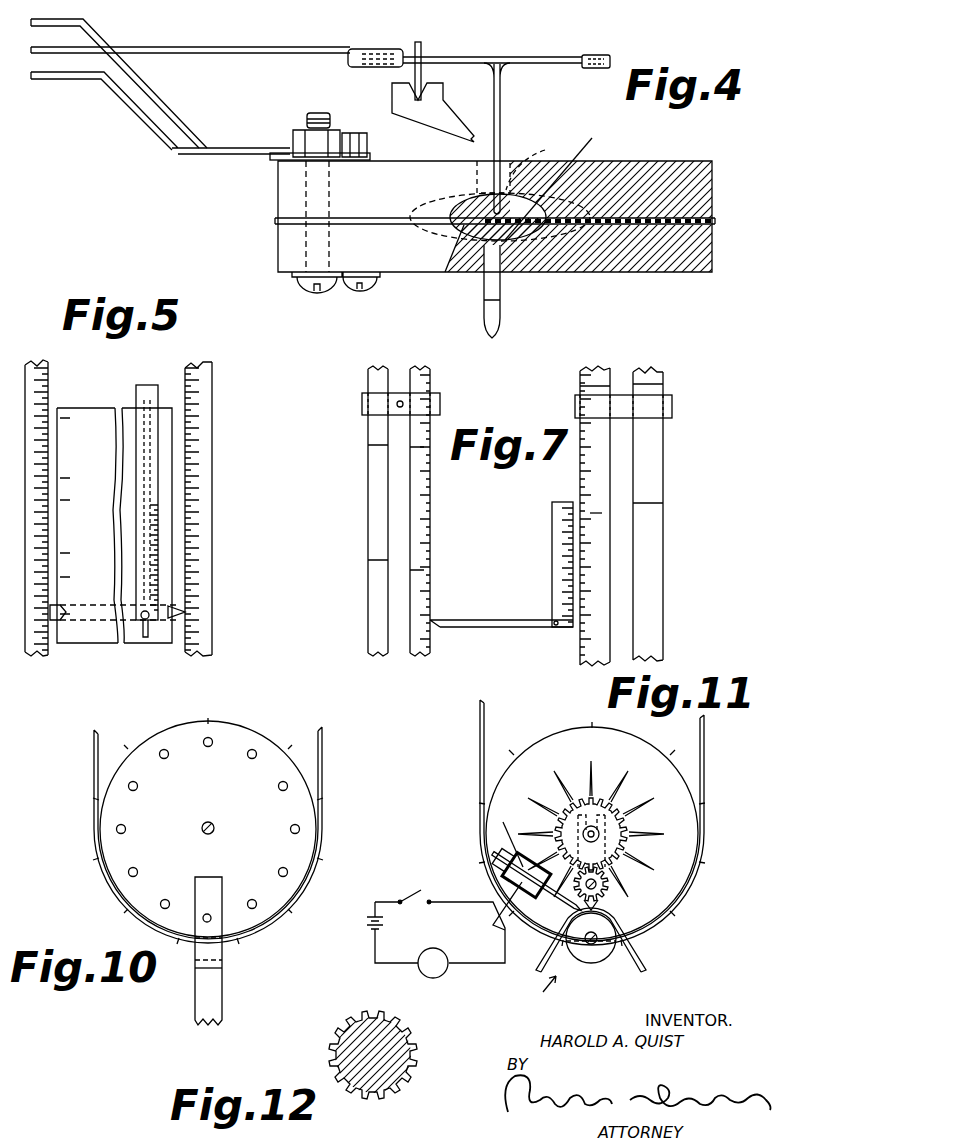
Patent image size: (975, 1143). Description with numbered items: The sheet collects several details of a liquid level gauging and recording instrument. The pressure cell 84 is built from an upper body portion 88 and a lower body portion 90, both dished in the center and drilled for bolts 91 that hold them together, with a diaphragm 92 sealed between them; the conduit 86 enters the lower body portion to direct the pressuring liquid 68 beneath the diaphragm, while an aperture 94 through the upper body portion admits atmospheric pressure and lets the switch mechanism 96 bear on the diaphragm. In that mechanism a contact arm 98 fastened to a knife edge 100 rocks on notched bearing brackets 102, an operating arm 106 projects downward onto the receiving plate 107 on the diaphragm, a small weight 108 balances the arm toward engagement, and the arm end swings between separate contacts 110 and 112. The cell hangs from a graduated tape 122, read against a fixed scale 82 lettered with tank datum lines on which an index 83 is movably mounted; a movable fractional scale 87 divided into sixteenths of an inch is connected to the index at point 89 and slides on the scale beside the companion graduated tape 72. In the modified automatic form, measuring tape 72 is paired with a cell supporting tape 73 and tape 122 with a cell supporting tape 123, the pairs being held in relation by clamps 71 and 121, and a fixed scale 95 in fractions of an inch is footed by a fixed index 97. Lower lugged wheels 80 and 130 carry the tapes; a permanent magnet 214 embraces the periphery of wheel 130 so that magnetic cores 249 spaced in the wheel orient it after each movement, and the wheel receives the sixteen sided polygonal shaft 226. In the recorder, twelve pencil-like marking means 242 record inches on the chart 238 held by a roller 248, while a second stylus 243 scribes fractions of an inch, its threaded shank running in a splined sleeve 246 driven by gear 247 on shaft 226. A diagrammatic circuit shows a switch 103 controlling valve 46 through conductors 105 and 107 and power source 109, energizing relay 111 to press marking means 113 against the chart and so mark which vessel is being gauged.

In FIG. 4, the contact 112 is at (58, 20).
In FIG. 4, the contact 110 is at (70, 76).
In FIG. 4, the contact arm 98 is at (305, 48).
In FIG. 4, the small weight 108 is at (590, 55).
In FIG. 4, the knife edge 100 is at (426, 52).
In FIG. 4, the notched bearing brackets 102 is at (445, 111).
In FIG. 4, the operating arm 106 is at (503, 132).
In FIG. 4, the switch mechanism 96 is at (516, 112).
In FIG. 4, the aperture 94 is at (529, 162).
In FIG. 4, the receiving plate 107 is at (564, 181).
In FIG. 11, the receiving plate 107 is at (506, 946).
In FIG. 4, the cell 84 is at (653, 284).
In FIG. 4, the upper body portion 88 is at (700, 191).
In FIG. 4, the diaphragm 92 is at (714, 220).
In FIG. 4, the pressuring liquid 68 is at (500, 220).
In FIG. 4, the lower body portion 90 is at (714, 260).
In FIG. 4, the bolts 91 is at (300, 190).
In FIG. 4, the conduit 86 is at (505, 283).
In FIG. 5, the graduated tape 72 is at (46, 366).
In FIG. 7, the graduated tape 72 is at (438, 383).
In FIG. 11, the graduated tape 72 is at (706, 745).
In FIG. 5, the fixed scale 82 is at (92, 408).
In FIG. 5, the movable fractional scale 87 is at (142, 395).
In FIG. 5, the graduated tape 122 is at (210, 388).
In FIG. 7, the graduated tape 122 is at (598, 374).
In FIG. 10, the graduated tape 122 is at (322, 752).
In FIG. 5, the connection point 89 is at (135, 635).
In FIG. 5, the index 83 is at (53, 622).
In FIG. 7, the cell supporting tape 73 is at (368, 443).
In FIG. 7, the clamp 71 is at (362, 393).
In FIG. 7, the fixed scale 95 is at (552, 530).
In FIG. 7, the index 97 is at (520, 628).
In FIG. 7, the cell supporting tape 123 is at (665, 490).
In FIG. 7, the clamp 121 is at (672, 404).
In FIG. 10, the lugged wheel 130 is at (305, 818).
In FIG. 10, the magnetic cores 249 is at (301, 830).
In FIG. 10, the shaft 226 is at (203, 823).
In FIG. 12, the shaft 226 is at (400, 1047).
In FIG. 10, the permanent magnet 214 is at (200, 985).
In FIG. 11, the lugged wheel 80 is at (706, 814).
In FIG. 11, the pencil-like marking means 242 is at (628, 780).
In FIG. 11, the gear 247 is at (615, 835).
In FIG. 11, the splined sleeve 246 is at (610, 886).
In FIG. 11, the second stylus 243 is at (600, 908).
In FIG. 11, the roller 248 is at (596, 963).
In FIG. 11, the chart 238 is at (635, 970).
In FIG. 11, the marking means 113 is at (500, 866).
In FIG. 11, the relay 111 is at (515, 835).
In FIG. 11, the conductor 105 is at (462, 902).
In FIG. 11, the switch 103 is at (420, 895).
In FIG. 11, the power source 109 is at (368, 932).
In FIG. 11, the valve 46 is at (440, 948).